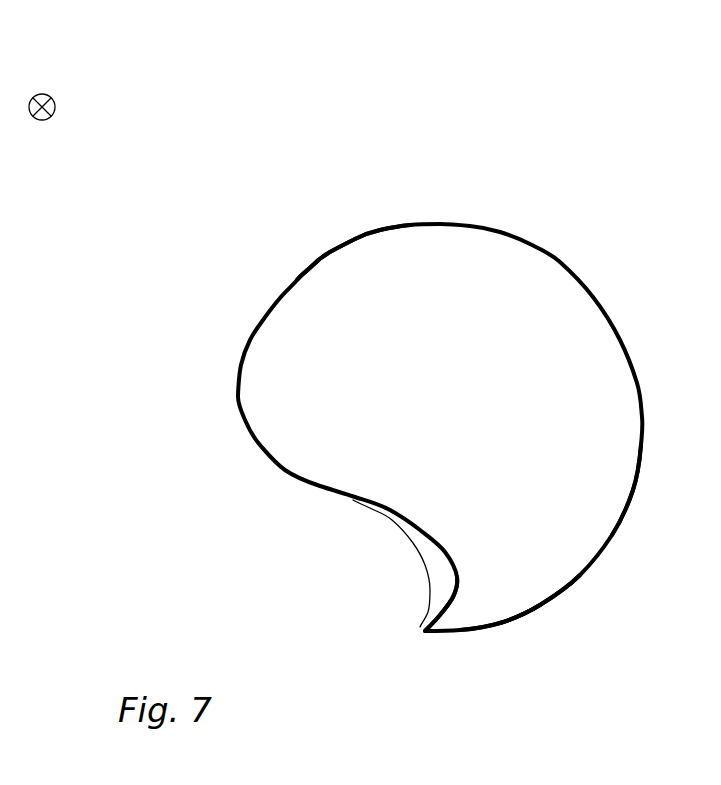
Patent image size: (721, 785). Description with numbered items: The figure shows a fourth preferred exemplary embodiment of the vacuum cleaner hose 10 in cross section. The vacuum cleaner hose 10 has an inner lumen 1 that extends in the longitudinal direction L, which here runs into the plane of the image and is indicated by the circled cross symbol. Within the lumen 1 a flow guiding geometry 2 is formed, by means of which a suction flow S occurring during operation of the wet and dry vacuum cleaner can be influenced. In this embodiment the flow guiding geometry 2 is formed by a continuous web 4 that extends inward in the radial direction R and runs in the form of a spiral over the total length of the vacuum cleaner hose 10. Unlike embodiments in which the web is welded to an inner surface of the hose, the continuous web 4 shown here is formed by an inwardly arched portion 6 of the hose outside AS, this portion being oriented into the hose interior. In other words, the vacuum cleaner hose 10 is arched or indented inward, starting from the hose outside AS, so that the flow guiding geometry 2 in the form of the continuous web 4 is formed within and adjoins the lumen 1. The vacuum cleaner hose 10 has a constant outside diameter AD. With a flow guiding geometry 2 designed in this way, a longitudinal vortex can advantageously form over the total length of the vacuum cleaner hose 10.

The vacuum cleaner hose 10 is at (595, 137).
The inner lumen 1 is at (503, 583).
The flow guiding geometry 2 is at (390, 550).
The continuous web 4 is at (458, 530).
The inwardly arched portion 6 is at (437, 573).
The longitudinal direction L is at (55, 97).
The outside diameter AD is at (345, 237).
The suction flow S is at (285, 395).
The hose outside AS is at (233, 477).
The radial direction R is at (300, 515).